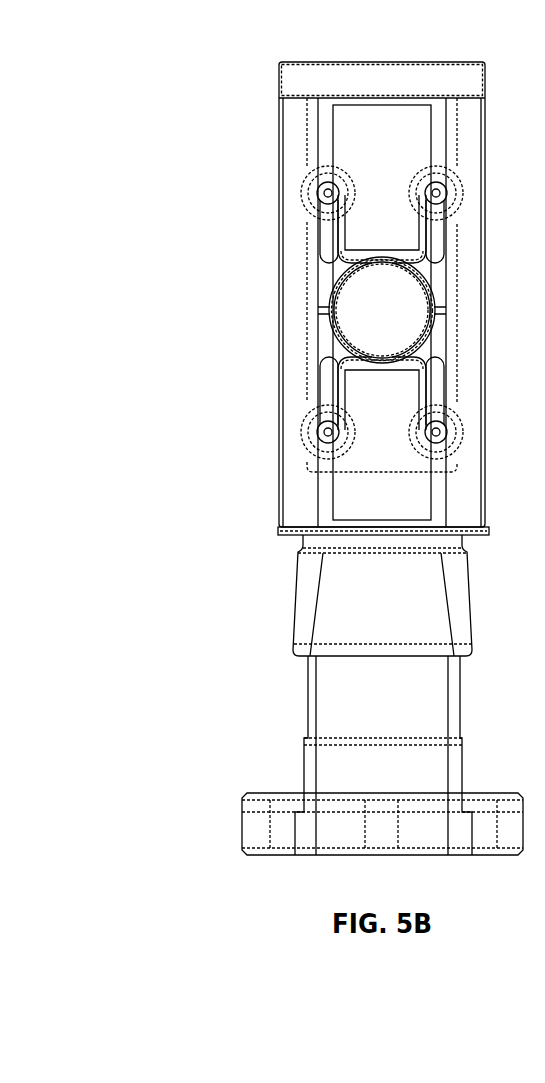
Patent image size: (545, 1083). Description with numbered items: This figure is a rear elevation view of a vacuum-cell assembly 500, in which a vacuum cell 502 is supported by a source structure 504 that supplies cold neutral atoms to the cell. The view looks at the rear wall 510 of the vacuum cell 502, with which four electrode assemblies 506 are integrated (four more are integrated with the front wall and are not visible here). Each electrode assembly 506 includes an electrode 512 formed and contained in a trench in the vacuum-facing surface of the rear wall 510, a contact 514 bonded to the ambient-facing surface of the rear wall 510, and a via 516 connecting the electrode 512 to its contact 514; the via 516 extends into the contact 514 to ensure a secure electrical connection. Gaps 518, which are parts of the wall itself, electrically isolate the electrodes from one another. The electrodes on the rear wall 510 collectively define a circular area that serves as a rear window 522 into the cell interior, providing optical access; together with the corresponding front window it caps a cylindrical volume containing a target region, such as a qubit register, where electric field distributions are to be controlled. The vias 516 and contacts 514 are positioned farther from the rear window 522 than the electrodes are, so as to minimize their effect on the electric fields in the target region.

The vacuum-cell assembly 500 is at (403, 38).
The vacuum cell 502 is at (279, 494).
The source structure 504 is at (335, 720).
The electrode assembly 506 is at (334, 376).
The rear wall 510 is at (360, 143).
The electrode 512 is at (318, 195).
The contact 514 is at (327, 282).
The via 516 is at (330, 247).
The gap 518 is at (330, 311).
The rear window 522 is at (355, 320).